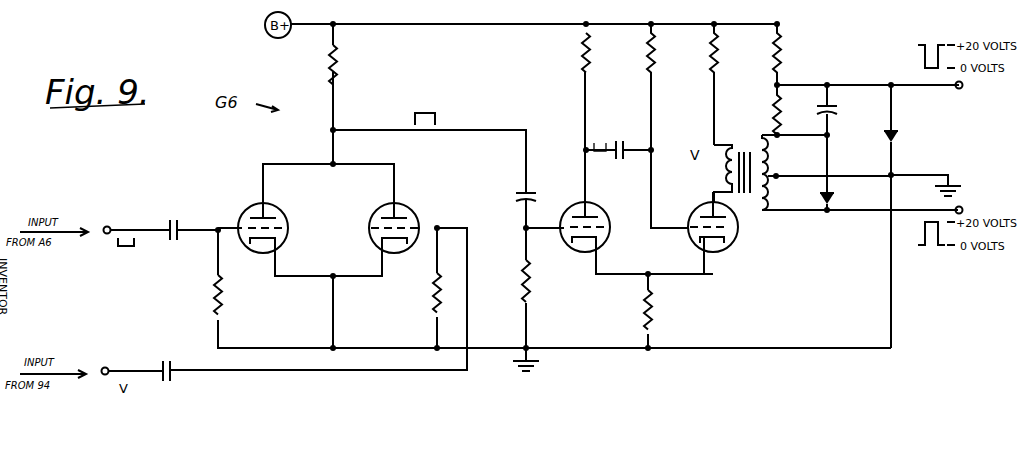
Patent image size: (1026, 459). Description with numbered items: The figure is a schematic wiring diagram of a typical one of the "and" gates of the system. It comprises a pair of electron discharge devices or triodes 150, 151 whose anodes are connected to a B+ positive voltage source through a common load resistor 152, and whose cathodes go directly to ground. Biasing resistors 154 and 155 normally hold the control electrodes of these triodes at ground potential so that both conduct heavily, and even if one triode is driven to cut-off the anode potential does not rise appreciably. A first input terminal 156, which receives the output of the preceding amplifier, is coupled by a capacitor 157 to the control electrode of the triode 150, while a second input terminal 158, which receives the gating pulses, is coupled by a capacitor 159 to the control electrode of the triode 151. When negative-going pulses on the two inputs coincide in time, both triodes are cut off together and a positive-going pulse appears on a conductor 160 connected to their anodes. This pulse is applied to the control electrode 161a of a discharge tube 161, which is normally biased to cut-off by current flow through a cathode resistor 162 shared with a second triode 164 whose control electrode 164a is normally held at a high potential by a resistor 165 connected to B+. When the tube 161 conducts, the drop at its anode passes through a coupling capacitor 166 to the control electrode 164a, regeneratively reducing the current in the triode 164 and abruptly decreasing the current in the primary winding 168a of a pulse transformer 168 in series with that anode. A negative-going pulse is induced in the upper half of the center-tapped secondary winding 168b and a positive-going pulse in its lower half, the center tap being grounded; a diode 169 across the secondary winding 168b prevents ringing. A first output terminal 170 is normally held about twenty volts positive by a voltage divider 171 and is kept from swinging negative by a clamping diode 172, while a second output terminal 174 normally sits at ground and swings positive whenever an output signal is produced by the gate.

The triode 150 is at (250, 210).
The triode 151 is at (412, 206).
The common load resistor 152 is at (337, 66).
The biasing resistor 154 is at (212, 296).
The biasing resistor 155 is at (434, 292).
The first input terminal 156 is at (107, 226).
The capacitor 157 is at (172, 220).
The second input terminal 158 is at (110, 359).
The capacitor 159 is at (164, 367).
The conductor 160 is at (487, 125).
The discharge tube 161 is at (569, 201).
The control electrode 161a is at (600, 242).
The cathode resistor 162 is at (644, 312).
The second triode 164 is at (722, 260).
The control electrode 164a is at (730, 240).
The resistor 165 is at (653, 55).
The coupling capacitor 166 is at (618, 138).
The pulse transformer 168 is at (836, 181).
The primary winding 168a is at (730, 144).
The secondary winding 168b is at (768, 174).
The diode 169 is at (835, 198).
The first output terminal 170 is at (961, 89).
The voltage divider 171 is at (777, 85).
The clamping diode 172 is at (900, 137).
The second output terminal 174 is at (963, 207).